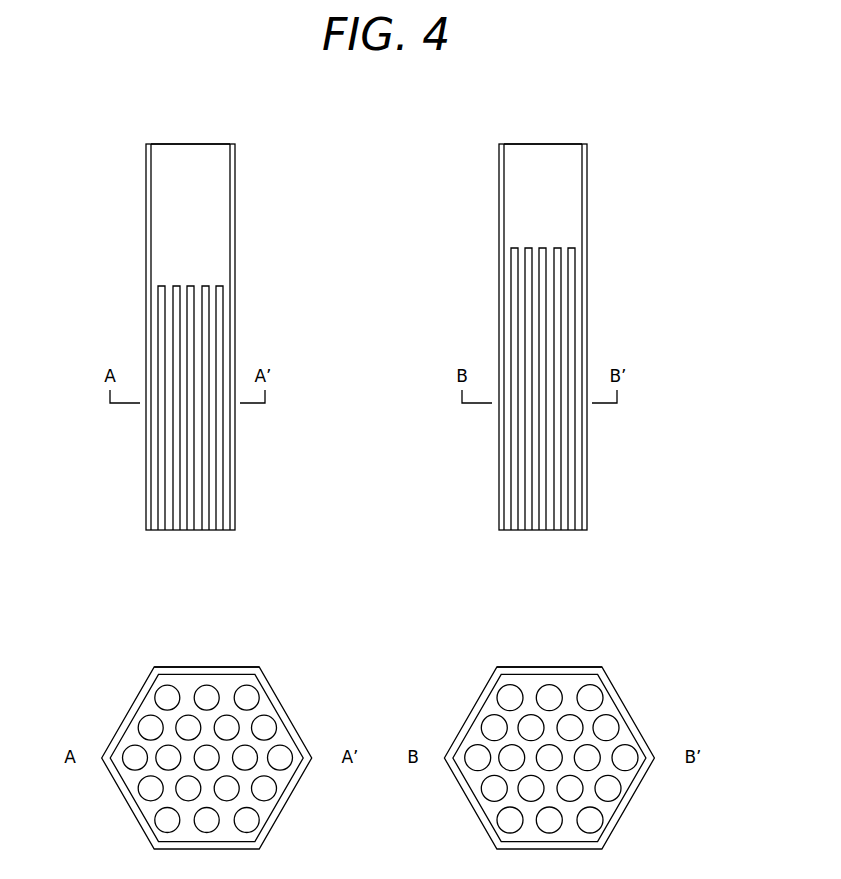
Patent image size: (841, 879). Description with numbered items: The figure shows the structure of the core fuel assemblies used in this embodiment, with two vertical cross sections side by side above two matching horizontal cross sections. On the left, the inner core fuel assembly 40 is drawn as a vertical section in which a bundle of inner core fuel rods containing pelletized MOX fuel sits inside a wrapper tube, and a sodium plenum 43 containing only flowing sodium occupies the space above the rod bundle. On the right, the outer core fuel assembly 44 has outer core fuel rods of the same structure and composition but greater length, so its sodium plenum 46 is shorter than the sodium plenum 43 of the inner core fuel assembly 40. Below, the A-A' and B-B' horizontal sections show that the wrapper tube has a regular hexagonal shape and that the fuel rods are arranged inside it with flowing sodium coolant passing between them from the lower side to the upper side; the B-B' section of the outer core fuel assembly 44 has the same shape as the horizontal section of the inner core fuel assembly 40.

The inner core fuel assembly 40 is at (190, 138).
The sodium plenum 43 is at (203, 197).
The outer core fuel assembly 44 is at (547, 138).
The sodium plenum 46 is at (555, 197).